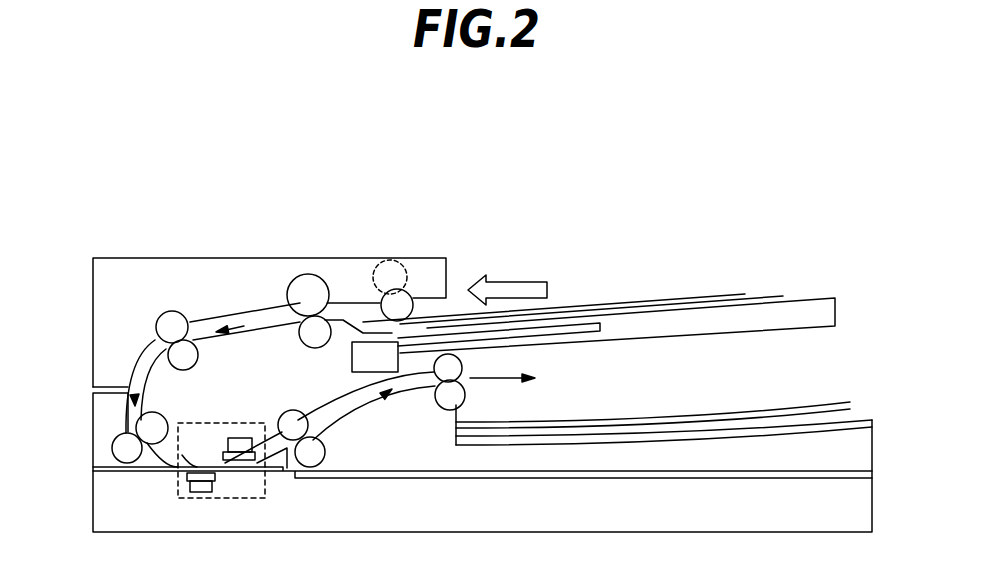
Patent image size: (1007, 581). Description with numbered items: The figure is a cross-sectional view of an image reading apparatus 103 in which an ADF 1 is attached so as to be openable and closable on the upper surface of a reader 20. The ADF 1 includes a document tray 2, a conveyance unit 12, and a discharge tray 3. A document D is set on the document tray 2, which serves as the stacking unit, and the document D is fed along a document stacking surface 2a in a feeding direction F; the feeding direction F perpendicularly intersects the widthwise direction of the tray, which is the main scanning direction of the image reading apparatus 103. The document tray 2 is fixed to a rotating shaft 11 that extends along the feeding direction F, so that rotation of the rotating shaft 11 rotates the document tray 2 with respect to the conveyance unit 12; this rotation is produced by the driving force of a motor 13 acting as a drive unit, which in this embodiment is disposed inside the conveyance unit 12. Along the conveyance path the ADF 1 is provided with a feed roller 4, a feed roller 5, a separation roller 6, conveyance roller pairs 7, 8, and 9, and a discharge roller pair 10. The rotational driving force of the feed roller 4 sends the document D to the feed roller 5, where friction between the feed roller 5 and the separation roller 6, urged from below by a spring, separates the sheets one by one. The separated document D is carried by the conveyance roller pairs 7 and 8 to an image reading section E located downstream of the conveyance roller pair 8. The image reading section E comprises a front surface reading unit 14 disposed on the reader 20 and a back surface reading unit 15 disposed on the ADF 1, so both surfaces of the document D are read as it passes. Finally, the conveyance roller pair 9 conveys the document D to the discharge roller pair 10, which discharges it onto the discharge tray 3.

The ADF 1 is at (647, 190).
The document tray 2 is at (837, 310).
The document stacking surface 2a is at (804, 298).
The discharge tray 3 is at (860, 447).
The feed roller 4 is at (402, 292).
The feed roller 5 is at (306, 275).
The separation roller 6 is at (316, 348).
The conveyance roller pair 7 is at (173, 311).
The conveyance roller pair 8 is at (112, 447).
The conveyance roller pair 9 is at (291, 410).
The discharge roller pair 10 is at (447, 410).
The rotating shaft 11 is at (603, 328).
The conveyance unit 12 is at (108, 285).
The motor 13 is at (360, 372).
The front surface reading unit 14 is at (201, 495).
The back surface reading unit 15 is at (240, 438).
The reader 20 is at (862, 505).
The image reading apparatus 103 is at (448, 277).
The document D is at (630, 302).
The image reading section E is at (178, 493).
The feeding direction F is at (507, 282).